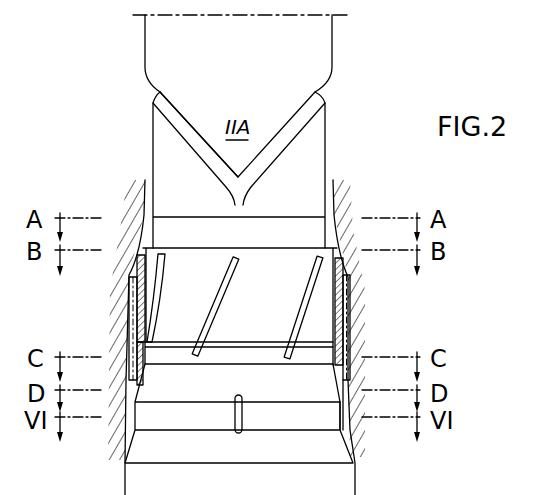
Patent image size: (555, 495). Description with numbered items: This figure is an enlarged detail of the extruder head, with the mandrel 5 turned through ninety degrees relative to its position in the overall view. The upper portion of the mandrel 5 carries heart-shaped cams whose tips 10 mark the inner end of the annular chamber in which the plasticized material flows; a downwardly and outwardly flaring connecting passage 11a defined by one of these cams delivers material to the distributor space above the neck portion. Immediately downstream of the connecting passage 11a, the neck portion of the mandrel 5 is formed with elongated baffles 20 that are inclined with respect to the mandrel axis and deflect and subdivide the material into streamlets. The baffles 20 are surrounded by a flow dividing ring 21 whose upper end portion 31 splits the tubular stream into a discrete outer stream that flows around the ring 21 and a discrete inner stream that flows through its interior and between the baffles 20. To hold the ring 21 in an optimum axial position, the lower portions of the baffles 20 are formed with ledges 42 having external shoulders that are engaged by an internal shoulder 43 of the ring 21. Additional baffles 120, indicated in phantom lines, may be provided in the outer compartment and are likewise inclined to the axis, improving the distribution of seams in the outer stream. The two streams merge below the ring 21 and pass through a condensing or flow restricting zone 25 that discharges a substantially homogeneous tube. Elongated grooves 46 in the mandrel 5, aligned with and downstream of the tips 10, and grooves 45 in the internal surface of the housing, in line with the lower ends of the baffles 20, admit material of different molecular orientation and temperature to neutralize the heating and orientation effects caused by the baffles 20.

The mandrel 5 is at (336, 57).
The tips of heart-shaped cams 10 is at (240, 182).
The connecting passage 11a is at (173, 112).
The upper end portion of the ring 31 is at (133, 250).
The condensing or flow restricting zone 25 is at (355, 458).
The internal shoulder 43 is at (130, 334).
The flow dividing ring 21 is at (338, 298).
The baffles 120 is at (135, 311).
The baffles 20 is at (219, 292).
The ledges 42 is at (292, 340).
The grooves 46 is at (235, 412).
The grooves 45 is at (345, 427).